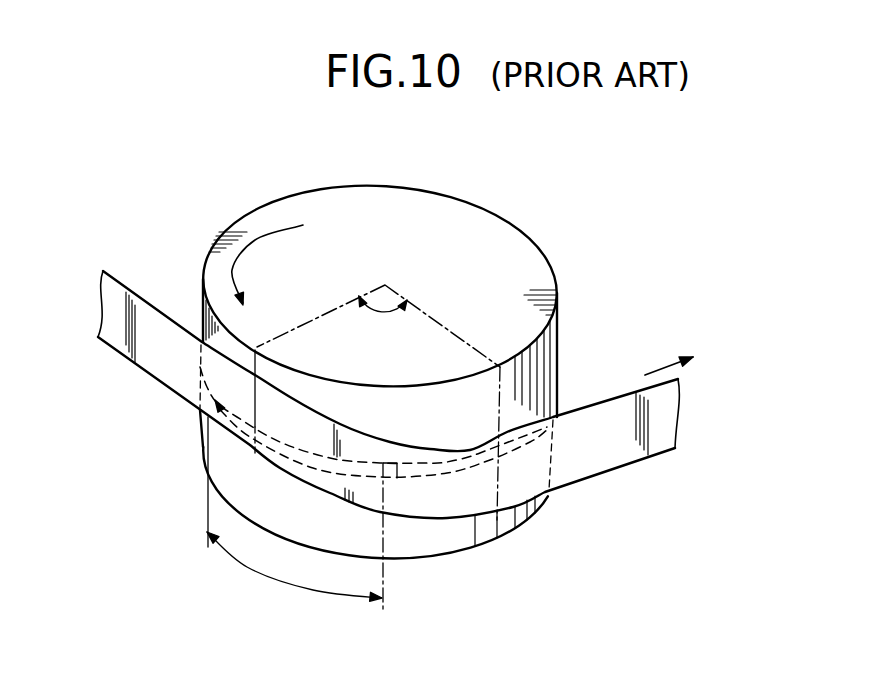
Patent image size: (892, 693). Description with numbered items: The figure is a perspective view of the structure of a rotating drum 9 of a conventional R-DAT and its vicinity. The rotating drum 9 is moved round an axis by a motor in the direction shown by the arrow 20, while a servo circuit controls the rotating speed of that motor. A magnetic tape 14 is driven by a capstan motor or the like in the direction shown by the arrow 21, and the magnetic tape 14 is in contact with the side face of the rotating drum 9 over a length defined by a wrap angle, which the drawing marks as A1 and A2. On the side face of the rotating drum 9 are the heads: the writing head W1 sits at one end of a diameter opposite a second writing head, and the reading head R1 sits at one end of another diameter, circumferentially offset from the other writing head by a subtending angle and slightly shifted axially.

The rotating drum 9 is at (585, 249).
The magnetic tape 14 is at (608, 457).
The arrow 20 is at (272, 234).
The arrow 21 is at (657, 368).
The reading head R1 is at (195, 423).
The writing head W1 is at (397, 447).
The wrap angle at top A1 is at (385, 308).
The wrap angle at bottom A2 is at (248, 568).